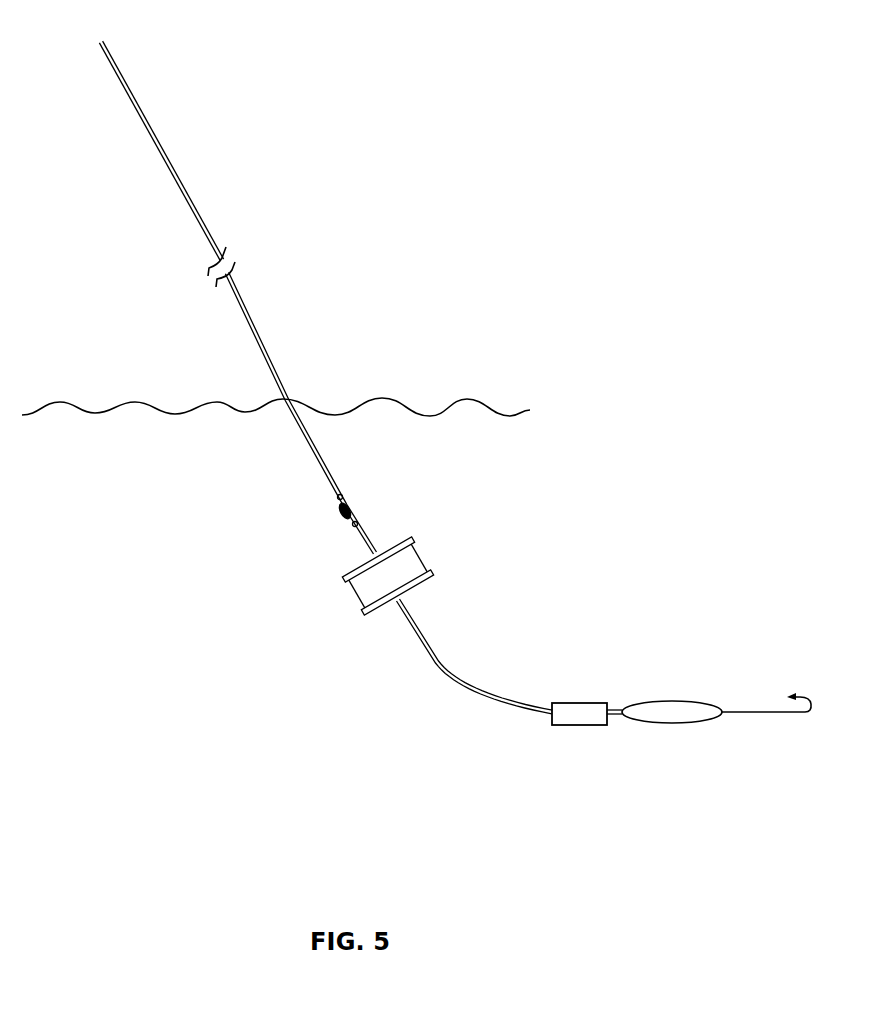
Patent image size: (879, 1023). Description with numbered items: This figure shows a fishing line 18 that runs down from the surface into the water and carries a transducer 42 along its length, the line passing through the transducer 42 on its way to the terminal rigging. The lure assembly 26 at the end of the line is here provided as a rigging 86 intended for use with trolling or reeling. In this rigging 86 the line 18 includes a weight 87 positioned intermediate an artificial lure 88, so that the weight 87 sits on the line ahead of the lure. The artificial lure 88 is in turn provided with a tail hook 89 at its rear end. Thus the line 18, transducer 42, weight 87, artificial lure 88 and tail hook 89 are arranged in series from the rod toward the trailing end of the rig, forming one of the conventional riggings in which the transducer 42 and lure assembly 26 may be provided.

The fishing line 18 is at (185, 200).
The transducer 42 is at (338, 575).
The lure assembly 26 is at (243, 709).
The rigging 86 is at (343, 720).
The weight 87 is at (583, 712).
The artificial lure 88 is at (668, 718).
The tail hook 89 is at (770, 712).